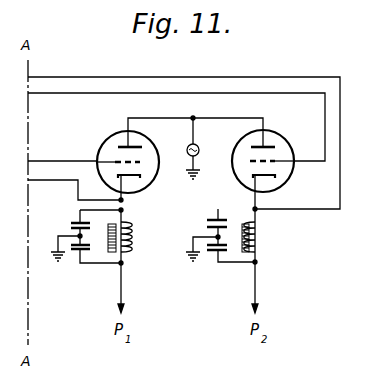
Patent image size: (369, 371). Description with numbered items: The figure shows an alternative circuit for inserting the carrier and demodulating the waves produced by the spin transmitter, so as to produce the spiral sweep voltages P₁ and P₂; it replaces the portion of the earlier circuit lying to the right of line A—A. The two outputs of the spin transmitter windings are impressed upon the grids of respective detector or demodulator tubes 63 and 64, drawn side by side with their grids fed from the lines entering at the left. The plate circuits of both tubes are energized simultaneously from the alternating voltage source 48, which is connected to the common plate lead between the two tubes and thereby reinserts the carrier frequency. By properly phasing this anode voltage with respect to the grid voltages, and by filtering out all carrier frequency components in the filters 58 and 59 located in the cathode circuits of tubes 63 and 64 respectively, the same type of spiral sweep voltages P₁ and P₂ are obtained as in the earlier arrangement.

The alternating voltage source 48 is at (217, 141).
The filter 58 is at (100, 256).
The filter 59 is at (230, 256).
The detector or demodulator tube 63 is at (150, 186).
The detector or demodulator tube 64 is at (289, 182).